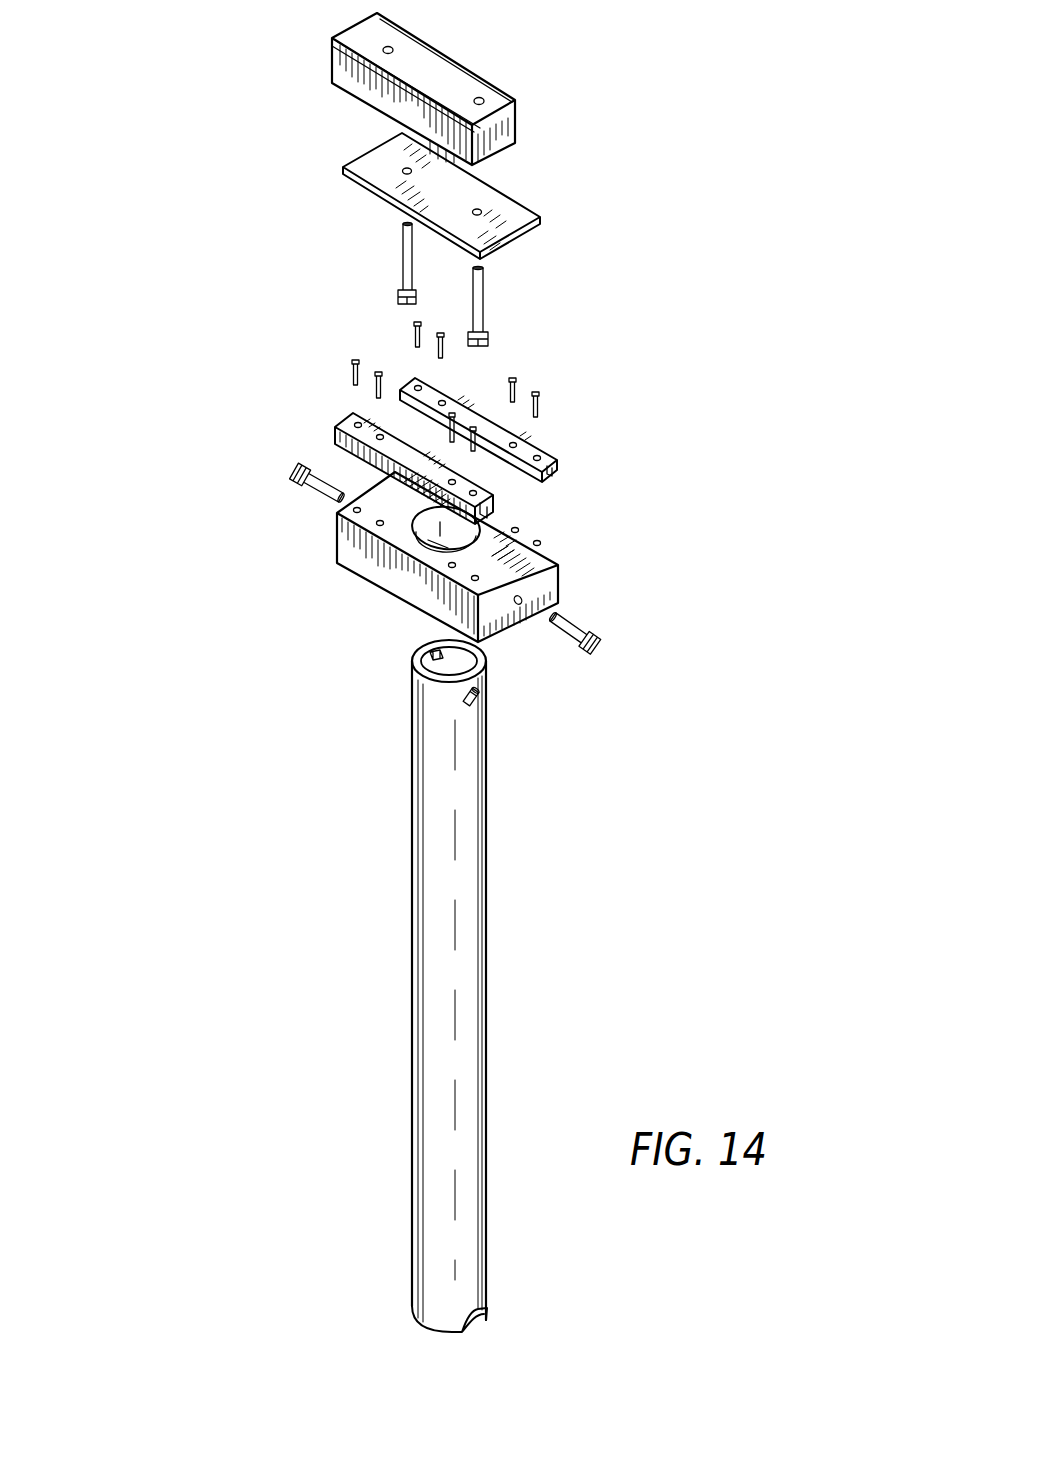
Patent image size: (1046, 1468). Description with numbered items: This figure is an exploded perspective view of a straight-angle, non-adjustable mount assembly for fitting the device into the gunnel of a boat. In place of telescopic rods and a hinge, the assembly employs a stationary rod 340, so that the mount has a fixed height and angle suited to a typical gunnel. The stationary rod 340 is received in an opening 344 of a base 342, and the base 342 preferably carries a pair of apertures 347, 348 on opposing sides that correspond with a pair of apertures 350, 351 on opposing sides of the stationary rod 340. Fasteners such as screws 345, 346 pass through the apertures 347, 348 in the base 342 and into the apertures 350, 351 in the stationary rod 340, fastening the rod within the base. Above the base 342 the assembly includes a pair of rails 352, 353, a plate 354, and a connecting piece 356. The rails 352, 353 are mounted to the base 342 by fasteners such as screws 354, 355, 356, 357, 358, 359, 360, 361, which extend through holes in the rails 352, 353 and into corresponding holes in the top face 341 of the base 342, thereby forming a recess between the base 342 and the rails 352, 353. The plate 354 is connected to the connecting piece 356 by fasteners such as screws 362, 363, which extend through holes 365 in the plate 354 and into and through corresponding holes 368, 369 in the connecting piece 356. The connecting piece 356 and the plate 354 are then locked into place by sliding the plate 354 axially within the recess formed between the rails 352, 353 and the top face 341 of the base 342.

The stationary rod 340 is at (428, 986).
The top face 341 is at (515, 553).
The base 342 is at (483, 558).
The opening 344 is at (416, 532).
The screw 345 is at (562, 640).
The screw 346 is at (312, 488).
The aperture 347 is at (524, 600).
The aperture 348 is at (442, 540).
The aperture 350 is at (481, 697).
The aperture 351 is at (430, 662).
The rail 352 is at (521, 449).
The rail 353 is at (330, 418).
The plate 354 is at (441, 259).
The screw 355 is at (375, 390).
The connecting piece 356 is at (409, 218).
The screw 357 is at (487, 450).
The screw 358 is at (414, 328).
The screw 359 is at (436, 350).
The screw 360 is at (514, 375).
The screw 361 is at (539, 404).
The screw 362 is at (484, 290).
The screw 363 is at (402, 265).
The hole 365 is at (402, 172).
The hole 368 is at (484, 100).
The hole 369 is at (393, 50).